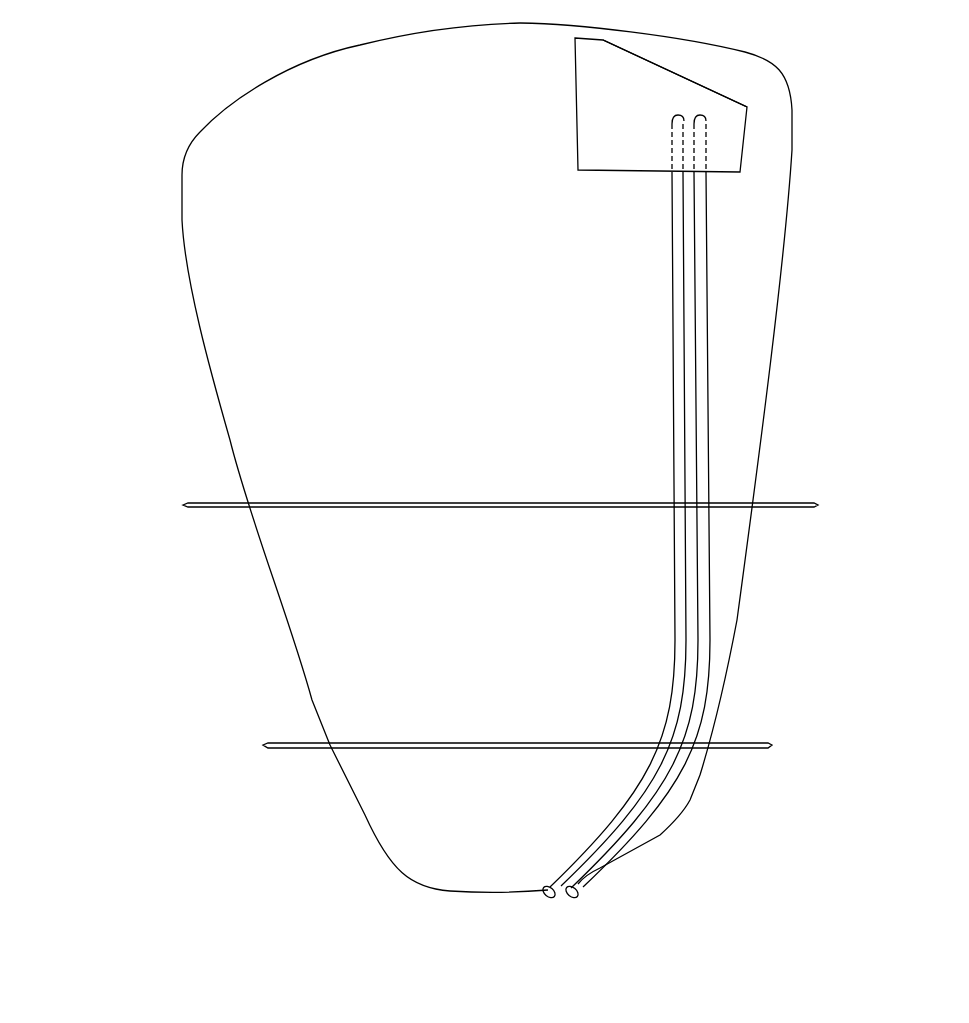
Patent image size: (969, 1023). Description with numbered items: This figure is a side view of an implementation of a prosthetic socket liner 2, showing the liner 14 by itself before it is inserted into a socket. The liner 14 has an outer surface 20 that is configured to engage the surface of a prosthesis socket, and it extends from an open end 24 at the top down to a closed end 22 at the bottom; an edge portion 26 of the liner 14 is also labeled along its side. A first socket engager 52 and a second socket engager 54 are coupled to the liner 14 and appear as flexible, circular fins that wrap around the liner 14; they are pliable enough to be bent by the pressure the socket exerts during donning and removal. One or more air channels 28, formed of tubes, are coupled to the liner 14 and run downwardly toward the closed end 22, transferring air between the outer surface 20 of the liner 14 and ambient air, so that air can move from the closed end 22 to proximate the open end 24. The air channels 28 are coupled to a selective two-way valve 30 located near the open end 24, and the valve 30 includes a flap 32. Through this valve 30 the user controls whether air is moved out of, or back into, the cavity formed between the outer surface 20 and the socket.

The prosthetic socket liner 2 is at (141, 280).
The liner 14 is at (222, 113).
The outer surface 20 is at (389, 283).
The closed end 22 is at (472, 893).
The open end 24 is at (792, 150).
The rear edge 26 is at (777, 300).
The air channels 28 is at (673, 395).
The selective two-way valve 30 is at (577, 97).
The flap 32 is at (678, 78).
The first socket engager 52 is at (210, 508).
The second socket engager 54 is at (737, 749).